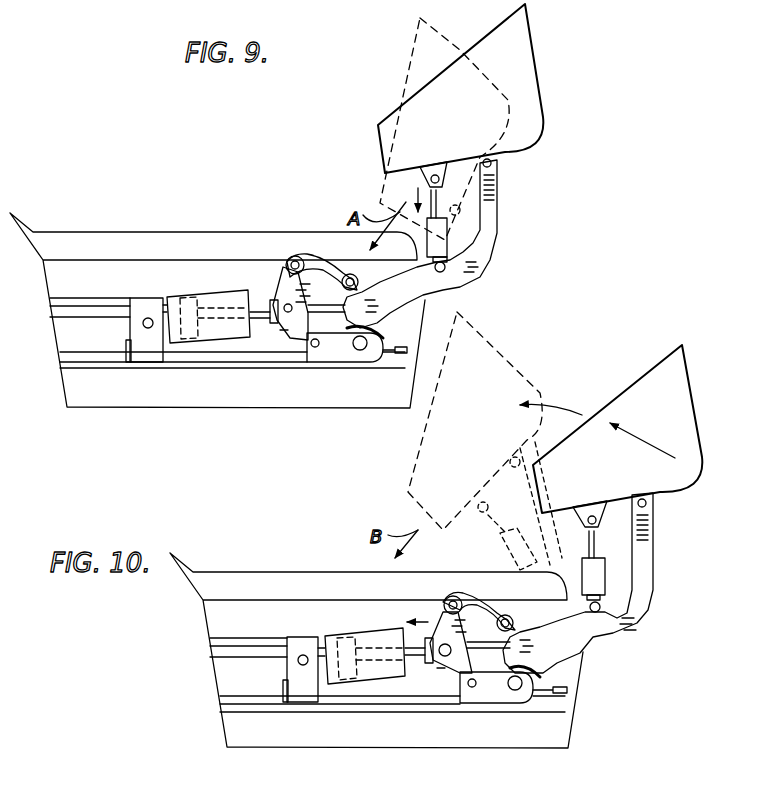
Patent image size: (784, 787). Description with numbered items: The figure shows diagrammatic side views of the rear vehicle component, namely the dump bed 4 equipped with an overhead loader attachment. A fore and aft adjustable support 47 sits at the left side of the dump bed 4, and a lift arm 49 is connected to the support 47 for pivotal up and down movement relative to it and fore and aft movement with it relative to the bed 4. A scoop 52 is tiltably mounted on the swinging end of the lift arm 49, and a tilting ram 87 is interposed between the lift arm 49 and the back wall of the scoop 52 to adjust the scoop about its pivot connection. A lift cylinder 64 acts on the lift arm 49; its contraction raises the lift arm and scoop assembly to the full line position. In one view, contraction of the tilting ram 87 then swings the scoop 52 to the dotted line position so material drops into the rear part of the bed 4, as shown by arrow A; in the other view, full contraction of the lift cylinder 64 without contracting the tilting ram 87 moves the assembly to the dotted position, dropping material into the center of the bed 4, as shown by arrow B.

In FIG. 9, the dump bed 4 is at (88, 286).
In FIG. 10, the dump bed 4 is at (258, 626).
In FIG. 9, the fore and aft adjustable support 47 is at (268, 352).
In FIG. 10, the fore and aft adjustable support 47 is at (417, 688).
In FIG. 9, the lift cylinder 64 is at (223, 298).
In FIG. 10, the lift cylinder 64 is at (368, 637).
In FIG. 9, the lift arm 49 is at (490, 253).
In FIG. 10, the lift arm 49 is at (592, 632).
In FIG. 9, the tilting ram 87 is at (440, 237).
In FIG. 10, the tilting ram 87 is at (598, 572).
In FIG. 9, the scoop 52 is at (537, 85).
In FIG. 10, the scoop 52 is at (643, 388).